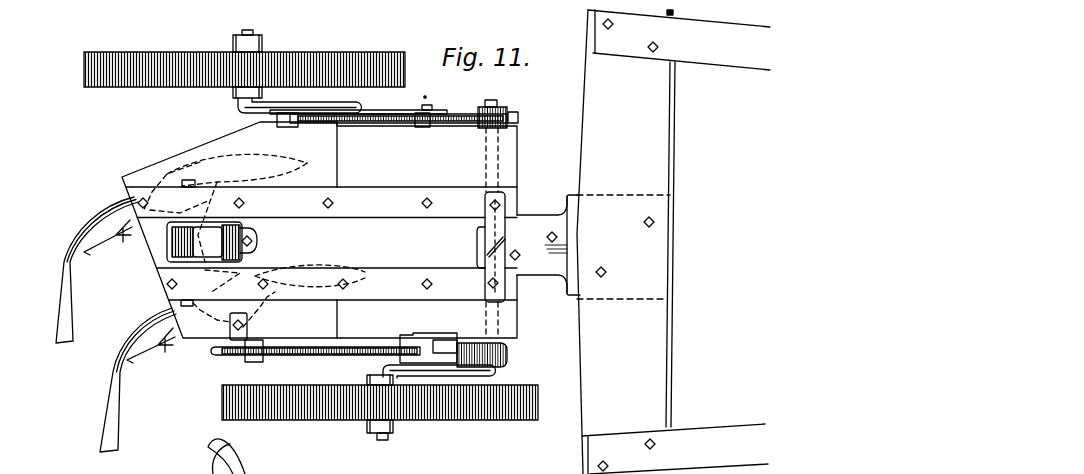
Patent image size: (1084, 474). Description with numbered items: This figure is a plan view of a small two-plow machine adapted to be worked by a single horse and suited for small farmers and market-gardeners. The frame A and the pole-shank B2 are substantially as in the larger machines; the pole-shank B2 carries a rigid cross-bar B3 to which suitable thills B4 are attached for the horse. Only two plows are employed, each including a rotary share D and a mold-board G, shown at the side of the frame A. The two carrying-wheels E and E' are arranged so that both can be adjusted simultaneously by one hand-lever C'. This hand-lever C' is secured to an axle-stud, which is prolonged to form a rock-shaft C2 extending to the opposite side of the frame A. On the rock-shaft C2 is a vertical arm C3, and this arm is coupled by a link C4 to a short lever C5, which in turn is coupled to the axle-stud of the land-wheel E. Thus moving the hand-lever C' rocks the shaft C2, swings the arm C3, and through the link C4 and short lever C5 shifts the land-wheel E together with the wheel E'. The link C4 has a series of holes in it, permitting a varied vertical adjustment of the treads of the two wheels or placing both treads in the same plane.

The frame A is at (319, 230).
The pole-shank B2 is at (327, 247).
The cross-bar B3 is at (592, 242).
The thills B4 is at (676, 242).
The land-wheel E is at (244, 64).
The carrying-wheel E' is at (380, 409).
The hand-lever C' is at (315, 342).
The rock-shaft C2 is at (496, 107).
The vertical arm C3 is at (465, 113).
The link C4 is at (358, 102).
The short lever C5 is at (302, 120).
The rotary share D is at (130, 297).
The mold-board G is at (116, 324).